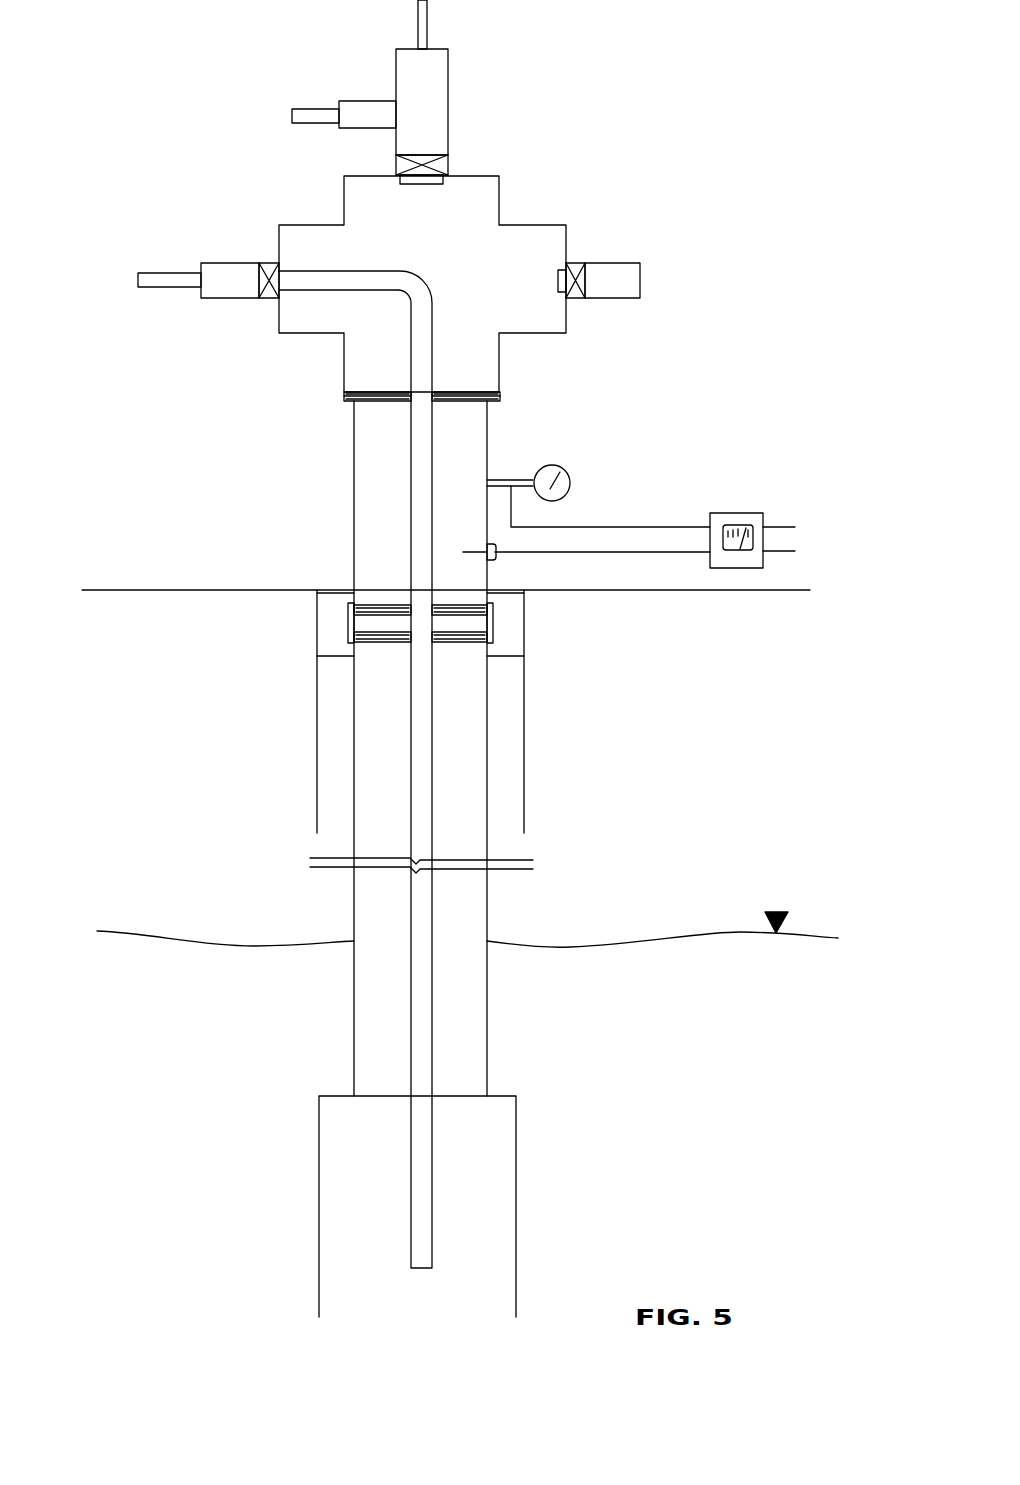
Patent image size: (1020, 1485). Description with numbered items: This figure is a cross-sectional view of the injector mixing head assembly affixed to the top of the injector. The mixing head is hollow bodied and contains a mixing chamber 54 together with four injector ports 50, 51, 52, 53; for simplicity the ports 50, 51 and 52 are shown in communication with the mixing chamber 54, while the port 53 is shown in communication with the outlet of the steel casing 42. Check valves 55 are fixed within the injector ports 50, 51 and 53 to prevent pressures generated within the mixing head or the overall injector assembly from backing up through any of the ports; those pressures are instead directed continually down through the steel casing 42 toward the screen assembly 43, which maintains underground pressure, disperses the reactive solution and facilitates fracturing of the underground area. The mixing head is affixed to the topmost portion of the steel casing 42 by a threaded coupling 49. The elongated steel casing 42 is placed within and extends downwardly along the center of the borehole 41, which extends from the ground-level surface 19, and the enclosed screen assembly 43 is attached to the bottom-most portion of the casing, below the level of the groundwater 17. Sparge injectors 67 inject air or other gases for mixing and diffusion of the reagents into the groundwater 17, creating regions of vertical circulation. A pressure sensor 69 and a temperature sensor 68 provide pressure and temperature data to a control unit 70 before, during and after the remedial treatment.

The groundwater 17 is at (467, 939).
The ground-level surface 19 is at (446, 576).
The borehole 41 is at (526, 746).
The steel casing 42 is at (352, 981).
The screen assembly 43 is at (518, 1207).
The threaded coupling 49 is at (495, 620).
The injector port 50 is at (652, 278).
The injector port 51 is at (427, 16).
The injector port 52 is at (278, 115).
The injector port 53 is at (130, 279).
The mixing chamber 54 is at (464, 261).
The check valves 55 is at (448, 162).
The sparge injectors 67 is at (409, 1186).
The temperature sensor 68 is at (629, 561).
The pressure sensor 69 is at (573, 484).
The control unit 70 is at (653, 527).